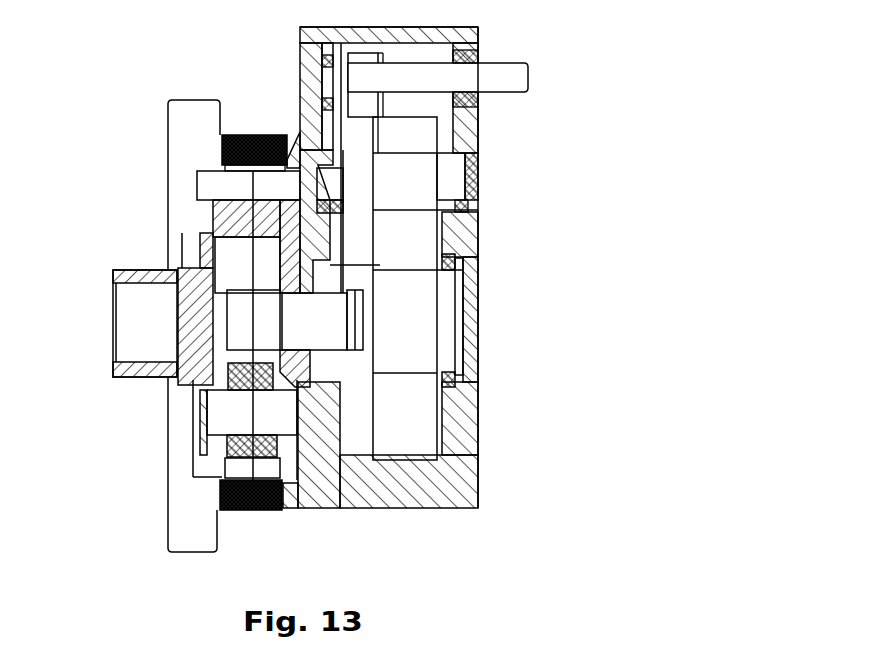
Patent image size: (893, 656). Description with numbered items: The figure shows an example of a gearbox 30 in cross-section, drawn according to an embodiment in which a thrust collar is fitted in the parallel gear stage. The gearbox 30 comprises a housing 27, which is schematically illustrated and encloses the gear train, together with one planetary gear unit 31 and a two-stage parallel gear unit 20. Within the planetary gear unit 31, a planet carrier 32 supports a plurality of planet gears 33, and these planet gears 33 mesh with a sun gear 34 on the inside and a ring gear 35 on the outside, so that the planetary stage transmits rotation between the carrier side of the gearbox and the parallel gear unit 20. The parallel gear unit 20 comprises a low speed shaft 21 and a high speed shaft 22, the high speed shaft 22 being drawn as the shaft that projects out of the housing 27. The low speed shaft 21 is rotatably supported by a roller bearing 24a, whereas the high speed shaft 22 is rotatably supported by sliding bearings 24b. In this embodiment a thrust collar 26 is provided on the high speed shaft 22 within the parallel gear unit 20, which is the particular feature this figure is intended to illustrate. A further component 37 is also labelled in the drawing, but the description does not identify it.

The two-stage parallel gear unit 20 is at (388, 518).
The low speed shaft 21 is at (463, 308).
The high speed shaft 22 is at (528, 70).
The roller bearing 24a is at (480, 212).
The sliding bearings 24b is at (298, 90).
The thrust collar 26 is at (300, 43).
The housing 27 is at (480, 32).
The gearbox 30 is at (112, 47).
The planetary gear unit 31 is at (244, 520).
The planet carrier 32 is at (157, 268).
The planet gears 33 is at (220, 490).
The sun gear 34 is at (190, 370).
The ring gear 35 is at (240, 133).
The bolt 37 is at (480, 172).